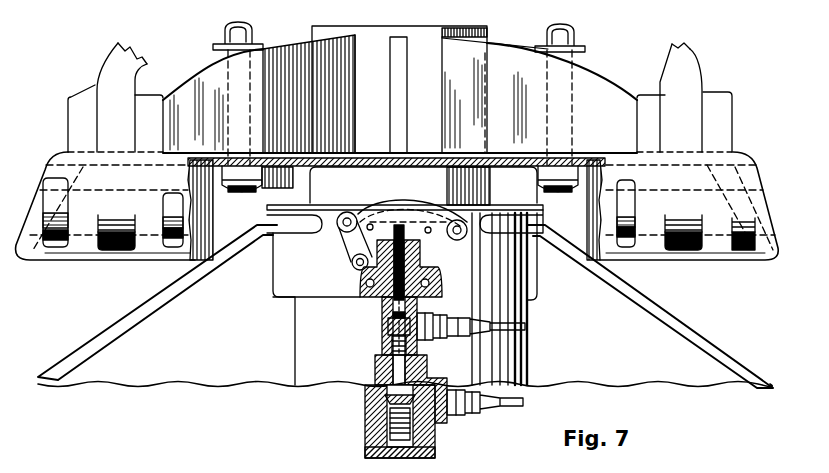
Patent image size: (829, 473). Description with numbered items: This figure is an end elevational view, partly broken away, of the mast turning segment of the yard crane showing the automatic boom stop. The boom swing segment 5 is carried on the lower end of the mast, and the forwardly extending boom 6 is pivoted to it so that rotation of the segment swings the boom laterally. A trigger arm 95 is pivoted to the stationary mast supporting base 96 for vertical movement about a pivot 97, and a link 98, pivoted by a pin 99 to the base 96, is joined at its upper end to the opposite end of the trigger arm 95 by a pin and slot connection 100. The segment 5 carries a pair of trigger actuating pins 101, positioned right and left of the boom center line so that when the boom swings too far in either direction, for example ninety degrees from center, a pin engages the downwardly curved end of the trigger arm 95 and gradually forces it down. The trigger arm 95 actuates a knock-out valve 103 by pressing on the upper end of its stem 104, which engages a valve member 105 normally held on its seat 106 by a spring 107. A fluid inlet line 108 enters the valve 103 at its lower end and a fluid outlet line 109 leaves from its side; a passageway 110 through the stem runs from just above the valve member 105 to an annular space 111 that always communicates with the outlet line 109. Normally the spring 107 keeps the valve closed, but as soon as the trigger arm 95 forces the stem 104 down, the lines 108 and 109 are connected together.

The boom swing segment 5 is at (593, 62).
The boom 6 is at (122, 67).
The trigger arm 95 is at (392, 200).
The mast supporting base 96 is at (533, 284).
The pivot 97 is at (458, 240).
The link 98 is at (345, 245).
The pin 99 is at (352, 266).
The pin and slot connection 100 is at (345, 212).
The trigger actuating pins 101 is at (565, 124).
The knock-out valve 103 is at (386, 315).
The valve stem 104 is at (439, 280).
The valve member 105 is at (373, 405).
The seat 106 is at (380, 387).
The spring 107 is at (400, 460).
The fluid inlet line 108 is at (514, 400).
The fluid outlet line 109 is at (521, 326).
The passageway 110 is at (418, 350).
The annular space 111 is at (391, 334).